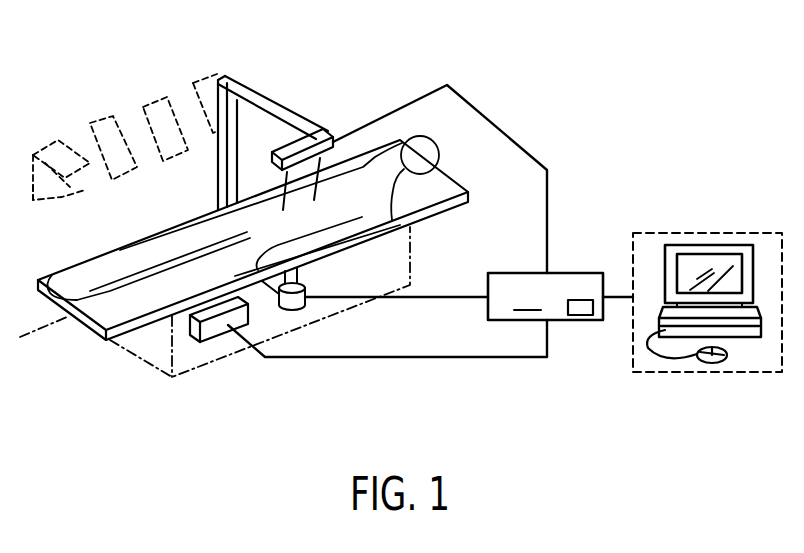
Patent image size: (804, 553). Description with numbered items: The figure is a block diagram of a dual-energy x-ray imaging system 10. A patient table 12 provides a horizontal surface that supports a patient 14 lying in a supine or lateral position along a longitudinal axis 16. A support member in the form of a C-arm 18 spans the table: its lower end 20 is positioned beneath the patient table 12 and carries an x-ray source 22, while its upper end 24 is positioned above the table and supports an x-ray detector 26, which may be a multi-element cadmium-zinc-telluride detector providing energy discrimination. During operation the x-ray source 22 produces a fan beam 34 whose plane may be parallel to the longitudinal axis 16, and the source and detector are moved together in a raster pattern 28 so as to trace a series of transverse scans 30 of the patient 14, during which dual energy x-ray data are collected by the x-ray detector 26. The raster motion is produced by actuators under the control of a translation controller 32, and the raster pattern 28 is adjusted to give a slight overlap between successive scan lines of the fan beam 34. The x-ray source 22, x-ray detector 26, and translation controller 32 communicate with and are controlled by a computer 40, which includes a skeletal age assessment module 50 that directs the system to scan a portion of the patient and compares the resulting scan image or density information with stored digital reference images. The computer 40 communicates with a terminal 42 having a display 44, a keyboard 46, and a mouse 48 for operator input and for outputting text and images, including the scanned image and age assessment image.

The dual-energy x-ray imaging system 10 is at (517, 68).
The patient table 12 is at (133, 342).
The patient 14 is at (107, 277).
The longitudinal axis 16 is at (41, 330).
The C-arm 18 is at (245, 83).
The lower end 20 is at (268, 287).
The x-ray source 22 is at (307, 304).
The upper end 24 is at (264, 106).
The x-ray detector 26 is at (312, 129).
The raster pattern 28 is at (90, 120).
The transverse scans 30 is at (35, 202).
The translation controller 32 is at (214, 343).
The fan beam 34 is at (346, 128).
The computer 40 is at (560, 296).
The terminal 42 is at (703, 233).
The display 44 is at (730, 255).
The keyboard 46 is at (688, 337).
The mouse 48 is at (727, 361).
The skeletal age assessment module 50 is at (583, 316).